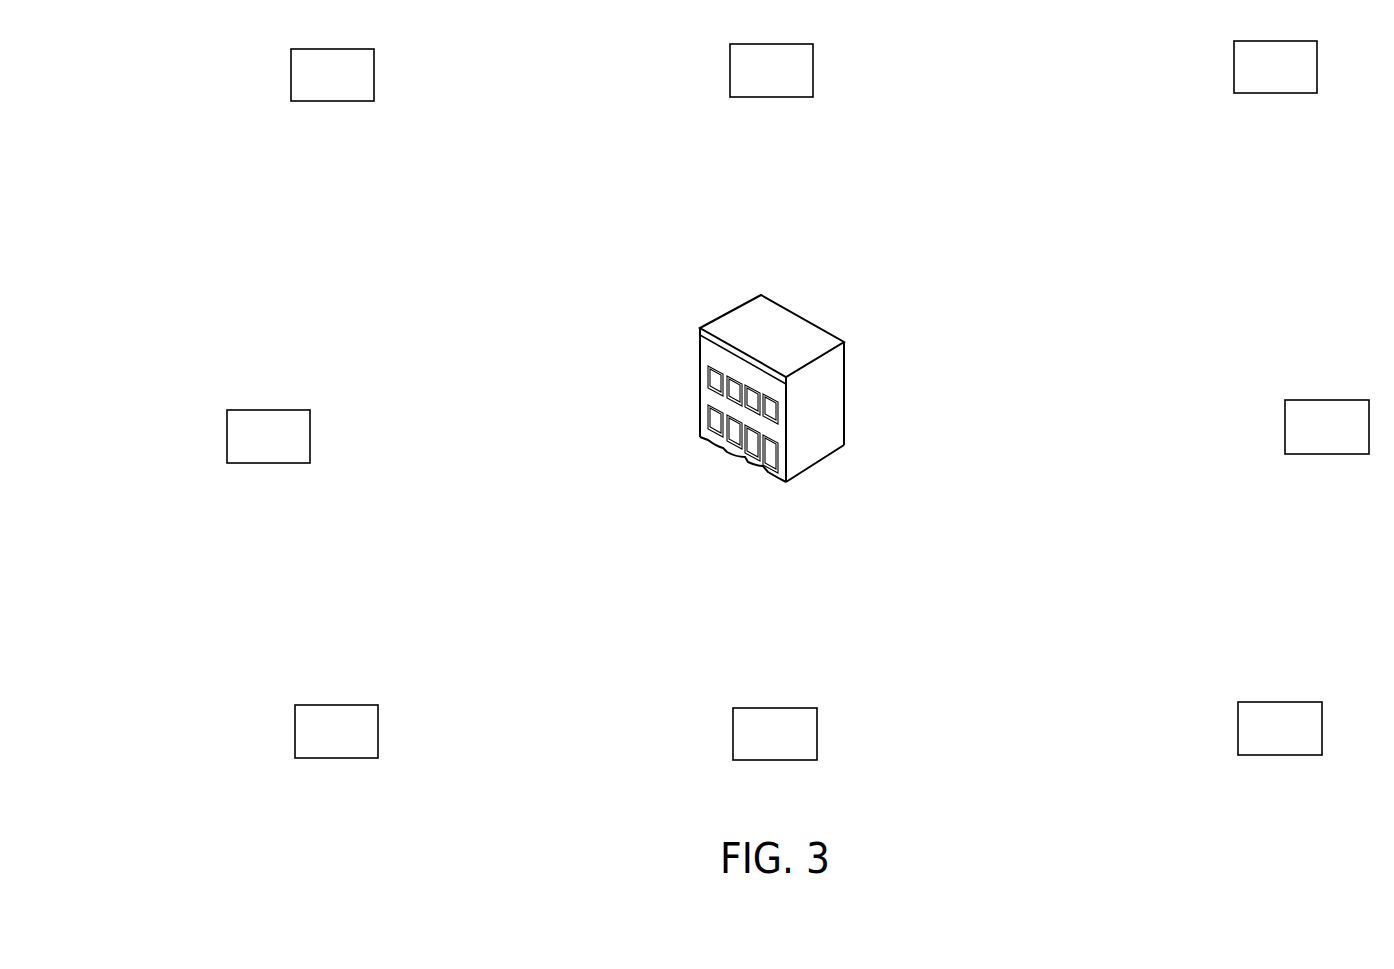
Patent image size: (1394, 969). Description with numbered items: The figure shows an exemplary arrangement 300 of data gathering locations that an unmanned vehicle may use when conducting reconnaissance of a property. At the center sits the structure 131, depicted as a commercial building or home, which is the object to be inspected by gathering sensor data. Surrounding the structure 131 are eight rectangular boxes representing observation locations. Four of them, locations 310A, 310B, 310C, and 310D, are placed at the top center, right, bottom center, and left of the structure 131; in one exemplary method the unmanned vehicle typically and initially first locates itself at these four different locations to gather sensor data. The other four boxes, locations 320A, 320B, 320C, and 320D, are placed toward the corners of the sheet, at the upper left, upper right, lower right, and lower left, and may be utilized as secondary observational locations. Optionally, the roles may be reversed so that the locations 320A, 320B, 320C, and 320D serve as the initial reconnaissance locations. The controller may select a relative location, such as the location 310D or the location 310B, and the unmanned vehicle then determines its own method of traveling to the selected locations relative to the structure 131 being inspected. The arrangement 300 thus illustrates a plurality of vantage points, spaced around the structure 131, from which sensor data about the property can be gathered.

The system environment 300 is at (913, 673).
The structure 131 is at (844, 387).
The location 310A is at (729, 72).
The location 310B is at (1327, 400).
The location 310C is at (733, 734).
The location 310D is at (268, 410).
The location 320A is at (290, 77).
The location 320B is at (1233, 68).
The location 320C is at (1279, 702).
The location 320D is at (337, 758).